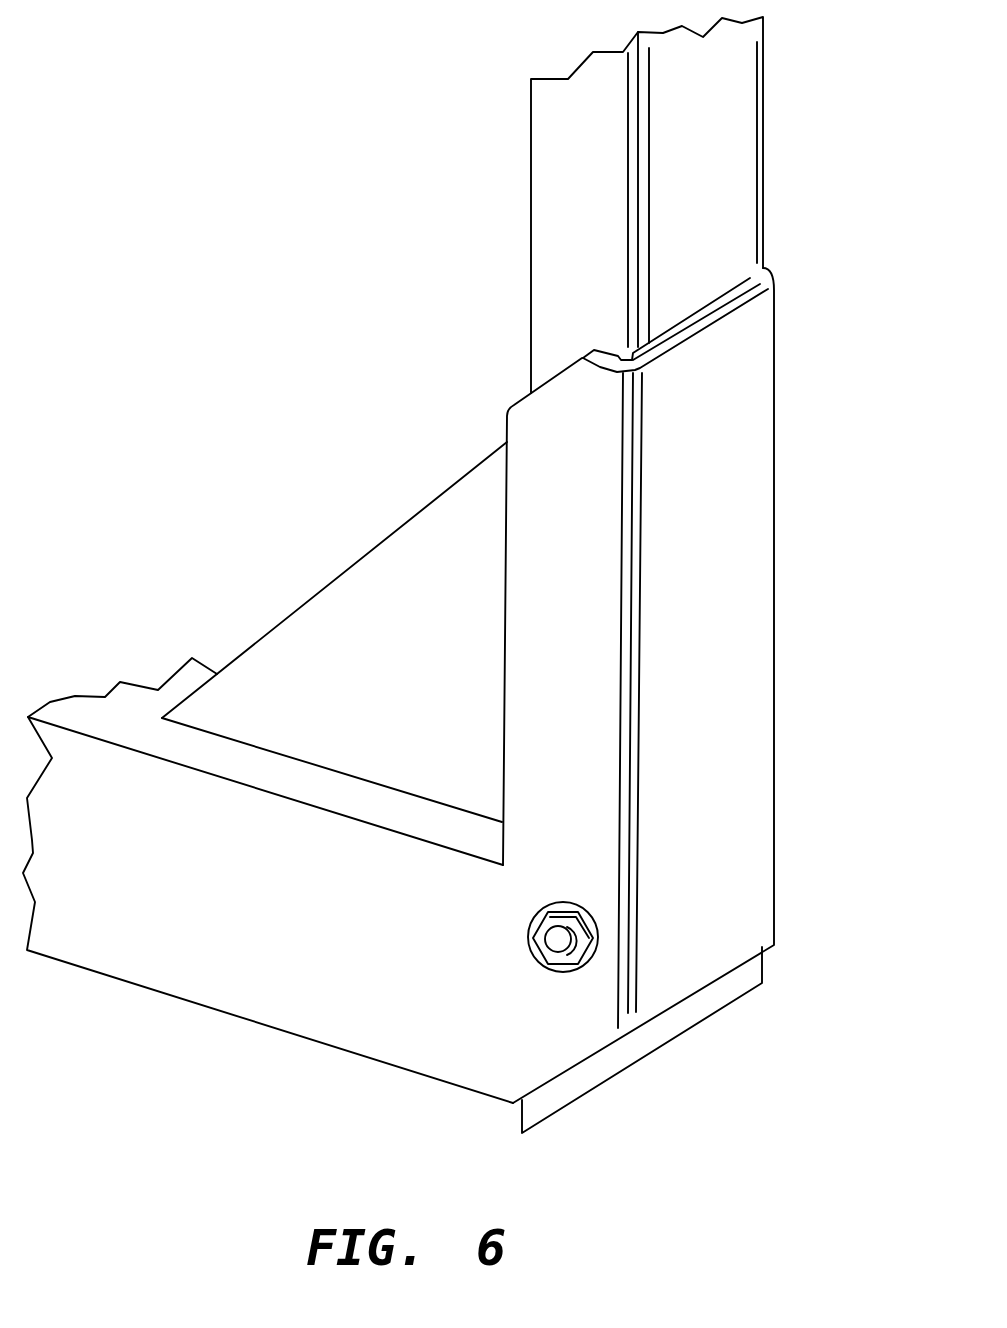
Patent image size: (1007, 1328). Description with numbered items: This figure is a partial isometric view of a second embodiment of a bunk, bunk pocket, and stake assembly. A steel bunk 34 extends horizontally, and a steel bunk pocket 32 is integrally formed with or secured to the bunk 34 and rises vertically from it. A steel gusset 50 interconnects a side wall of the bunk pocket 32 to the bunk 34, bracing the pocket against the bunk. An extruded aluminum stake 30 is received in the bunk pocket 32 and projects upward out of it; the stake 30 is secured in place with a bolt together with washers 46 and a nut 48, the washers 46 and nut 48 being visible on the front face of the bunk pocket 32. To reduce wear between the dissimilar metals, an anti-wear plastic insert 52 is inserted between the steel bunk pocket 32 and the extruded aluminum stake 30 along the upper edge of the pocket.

The extruded aluminum stake 30 is at (514, 240).
The steel bunk pocket 32 is at (786, 475).
The bunk 34 is at (207, 1019).
The washers 46 is at (576, 987).
The nut 48 is at (565, 966).
The steel gusset 50 is at (394, 506).
The anti-wear plastic insert 52 is at (770, 283).